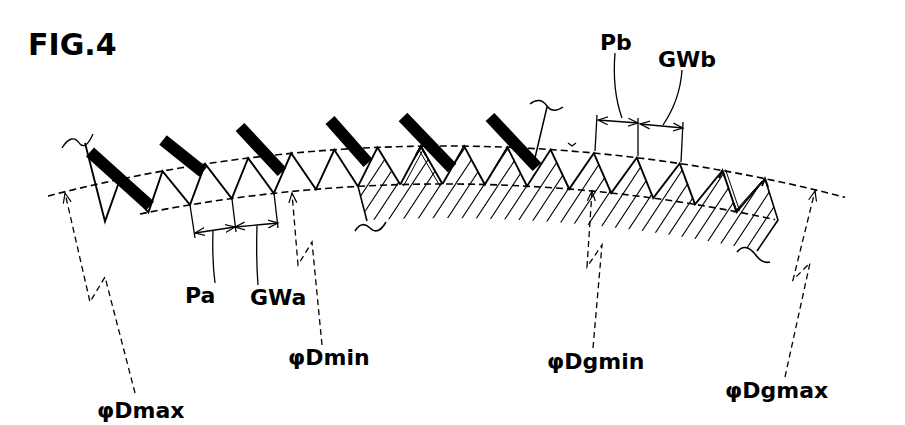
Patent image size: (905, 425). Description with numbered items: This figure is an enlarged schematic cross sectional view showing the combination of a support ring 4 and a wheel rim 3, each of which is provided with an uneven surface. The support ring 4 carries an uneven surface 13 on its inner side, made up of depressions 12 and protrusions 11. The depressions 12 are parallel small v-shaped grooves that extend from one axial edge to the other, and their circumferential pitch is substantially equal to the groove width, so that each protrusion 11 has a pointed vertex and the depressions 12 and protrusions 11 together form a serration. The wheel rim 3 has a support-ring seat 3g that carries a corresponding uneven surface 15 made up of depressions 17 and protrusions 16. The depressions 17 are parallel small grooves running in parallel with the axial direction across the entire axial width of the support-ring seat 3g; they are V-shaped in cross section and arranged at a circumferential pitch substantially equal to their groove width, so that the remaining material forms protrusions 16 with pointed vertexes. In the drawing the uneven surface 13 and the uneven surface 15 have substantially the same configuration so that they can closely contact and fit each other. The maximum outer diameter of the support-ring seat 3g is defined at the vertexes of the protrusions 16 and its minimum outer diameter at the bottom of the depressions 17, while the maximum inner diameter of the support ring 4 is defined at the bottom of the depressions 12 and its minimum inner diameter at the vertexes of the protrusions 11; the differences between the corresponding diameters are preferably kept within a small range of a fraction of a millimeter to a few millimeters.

The wheel rim 3 is at (648, 255).
The support-ring seat 3g is at (570, 144).
The support ring 4 is at (303, 132).
The protrusion 11 is at (438, 173).
The depression 12 is at (422, 152).
The uneven surface 13 is at (478, 308).
The uneven surface 15 is at (838, 70).
The protrusion 16 is at (765, 180).
The depression 17 is at (741, 203).